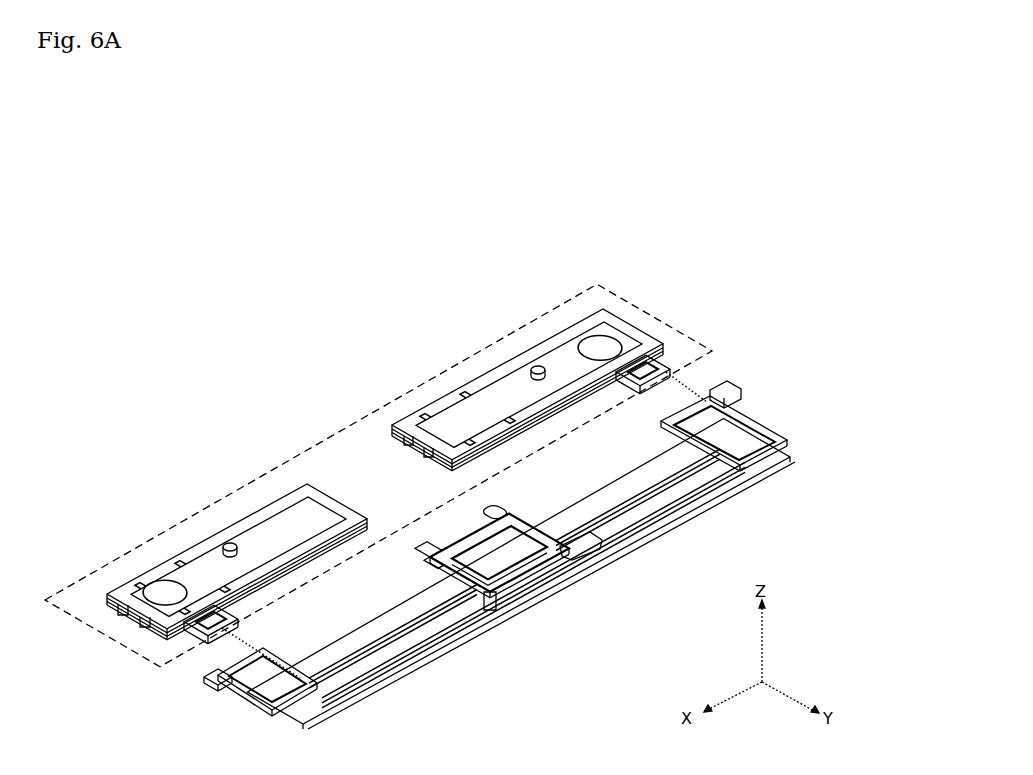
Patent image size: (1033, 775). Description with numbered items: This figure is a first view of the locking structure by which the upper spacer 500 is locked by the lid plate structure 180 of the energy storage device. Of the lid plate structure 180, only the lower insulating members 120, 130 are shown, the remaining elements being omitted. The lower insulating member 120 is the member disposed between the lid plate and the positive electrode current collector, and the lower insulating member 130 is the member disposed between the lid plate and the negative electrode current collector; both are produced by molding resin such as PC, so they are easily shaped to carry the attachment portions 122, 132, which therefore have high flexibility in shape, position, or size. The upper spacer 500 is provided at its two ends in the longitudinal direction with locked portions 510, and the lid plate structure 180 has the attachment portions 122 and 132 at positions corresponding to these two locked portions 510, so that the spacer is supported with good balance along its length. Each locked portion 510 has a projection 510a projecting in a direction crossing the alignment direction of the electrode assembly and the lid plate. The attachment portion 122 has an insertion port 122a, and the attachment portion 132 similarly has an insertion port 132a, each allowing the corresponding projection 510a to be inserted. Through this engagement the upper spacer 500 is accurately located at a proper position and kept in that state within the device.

The lower insulating member 120 is at (513, 374).
The attachment portion 122 is at (657, 378).
The insertion port 122a is at (650, 380).
The lower insulating member 130 is at (243, 522).
The attachment portion 132 is at (208, 645).
The insertion port 132a is at (225, 630).
The lid plate structure 180 is at (350, 424).
The upper spacer 500 is at (543, 592).
The locked portion 510 is at (786, 474).
The projection 510a is at (770, 430).